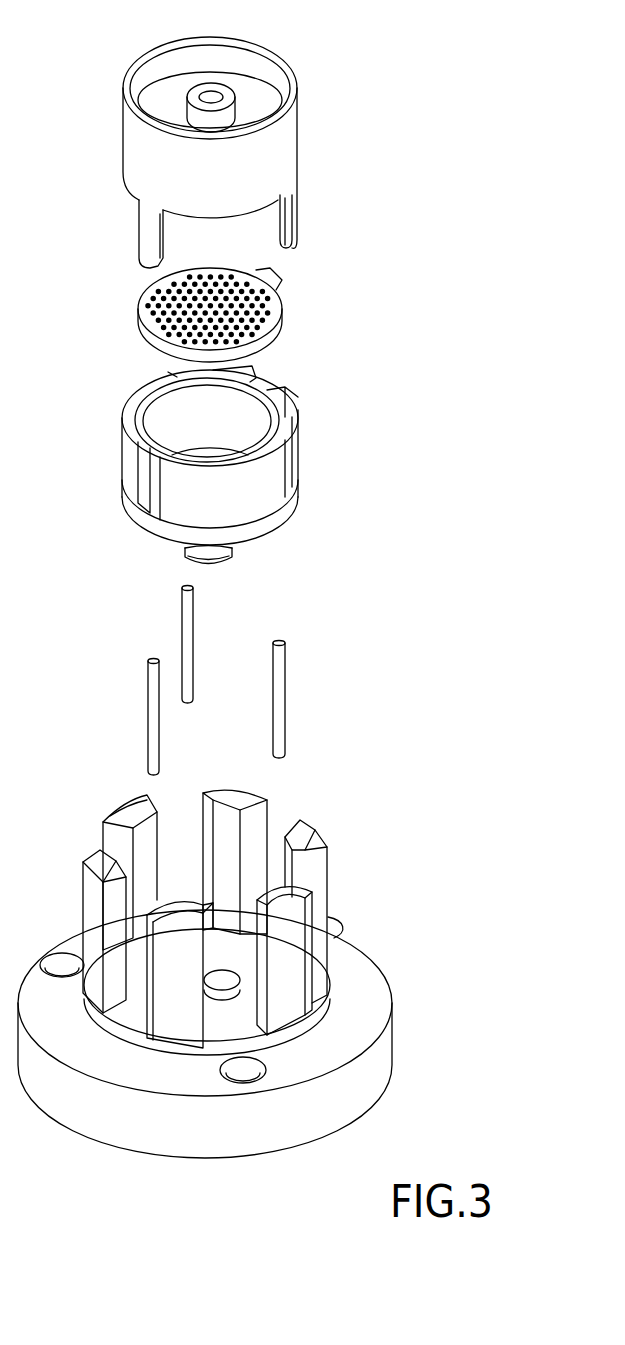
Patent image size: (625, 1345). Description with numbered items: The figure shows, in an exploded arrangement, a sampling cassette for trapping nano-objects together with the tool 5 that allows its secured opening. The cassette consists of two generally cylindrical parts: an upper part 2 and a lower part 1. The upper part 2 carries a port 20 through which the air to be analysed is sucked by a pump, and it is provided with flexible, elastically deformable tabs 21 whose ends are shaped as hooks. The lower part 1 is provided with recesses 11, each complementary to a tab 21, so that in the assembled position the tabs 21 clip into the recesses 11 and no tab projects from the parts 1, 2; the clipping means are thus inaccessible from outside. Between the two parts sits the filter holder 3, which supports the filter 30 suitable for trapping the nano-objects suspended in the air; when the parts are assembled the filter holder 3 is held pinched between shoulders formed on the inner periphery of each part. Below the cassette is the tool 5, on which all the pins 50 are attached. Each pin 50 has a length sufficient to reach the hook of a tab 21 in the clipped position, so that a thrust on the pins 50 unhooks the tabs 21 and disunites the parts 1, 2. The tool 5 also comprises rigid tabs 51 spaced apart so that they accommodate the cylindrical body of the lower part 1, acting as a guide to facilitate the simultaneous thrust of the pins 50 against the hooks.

The lower part 1 is at (258, 524).
The recess 11 is at (137, 493).
The upper part 2 is at (280, 152).
The port 20 is at (214, 95).
The flexible tab 21 is at (280, 222).
The filter holder 3 is at (148, 308).
The filter 30 is at (258, 324).
The tool 5 is at (367, 968).
The pin 50 is at (152, 710).
The rigid tab 51 is at (303, 834).